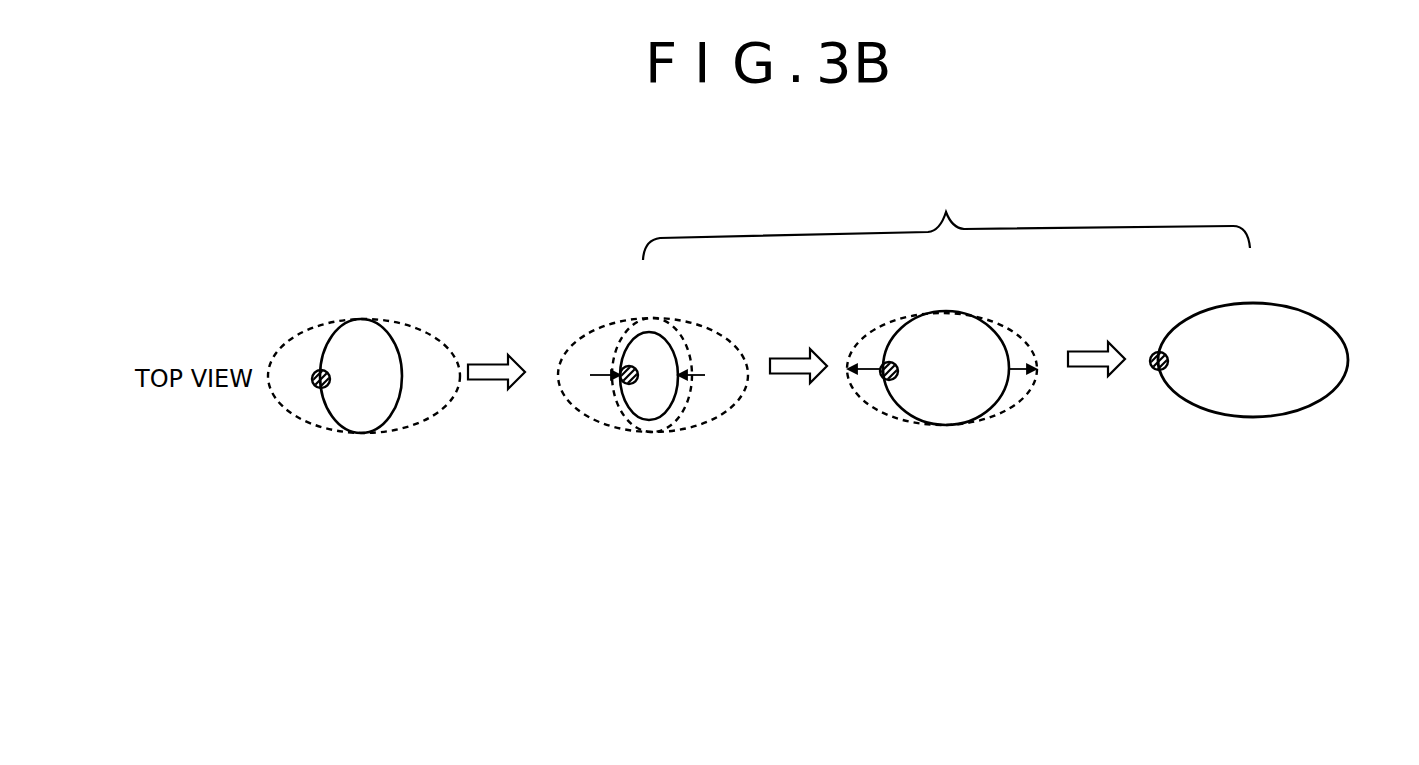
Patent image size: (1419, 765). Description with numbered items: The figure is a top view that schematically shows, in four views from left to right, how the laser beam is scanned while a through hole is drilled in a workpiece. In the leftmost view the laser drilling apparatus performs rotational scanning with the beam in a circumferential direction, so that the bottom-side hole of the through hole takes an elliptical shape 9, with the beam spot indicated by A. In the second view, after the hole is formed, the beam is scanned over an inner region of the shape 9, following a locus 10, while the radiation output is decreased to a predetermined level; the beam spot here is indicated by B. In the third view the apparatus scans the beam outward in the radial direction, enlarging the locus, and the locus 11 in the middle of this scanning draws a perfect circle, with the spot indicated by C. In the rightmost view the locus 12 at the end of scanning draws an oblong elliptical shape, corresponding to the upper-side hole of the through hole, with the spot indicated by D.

The shape of the bottom-side hole of the through hole 9 is at (362, 373).
The locus of the laser beam 10 is at (662, 370).
The locus of the laser beam 11 is at (956, 364).
The locus of the laser beam 12 is at (1254, 349).
The spot of the laser beam A is at (312, 373).
The spot of the laser beam B is at (622, 370).
The spot of the laser beam C is at (882, 364).
The spot of the laser beam D is at (1157, 354).